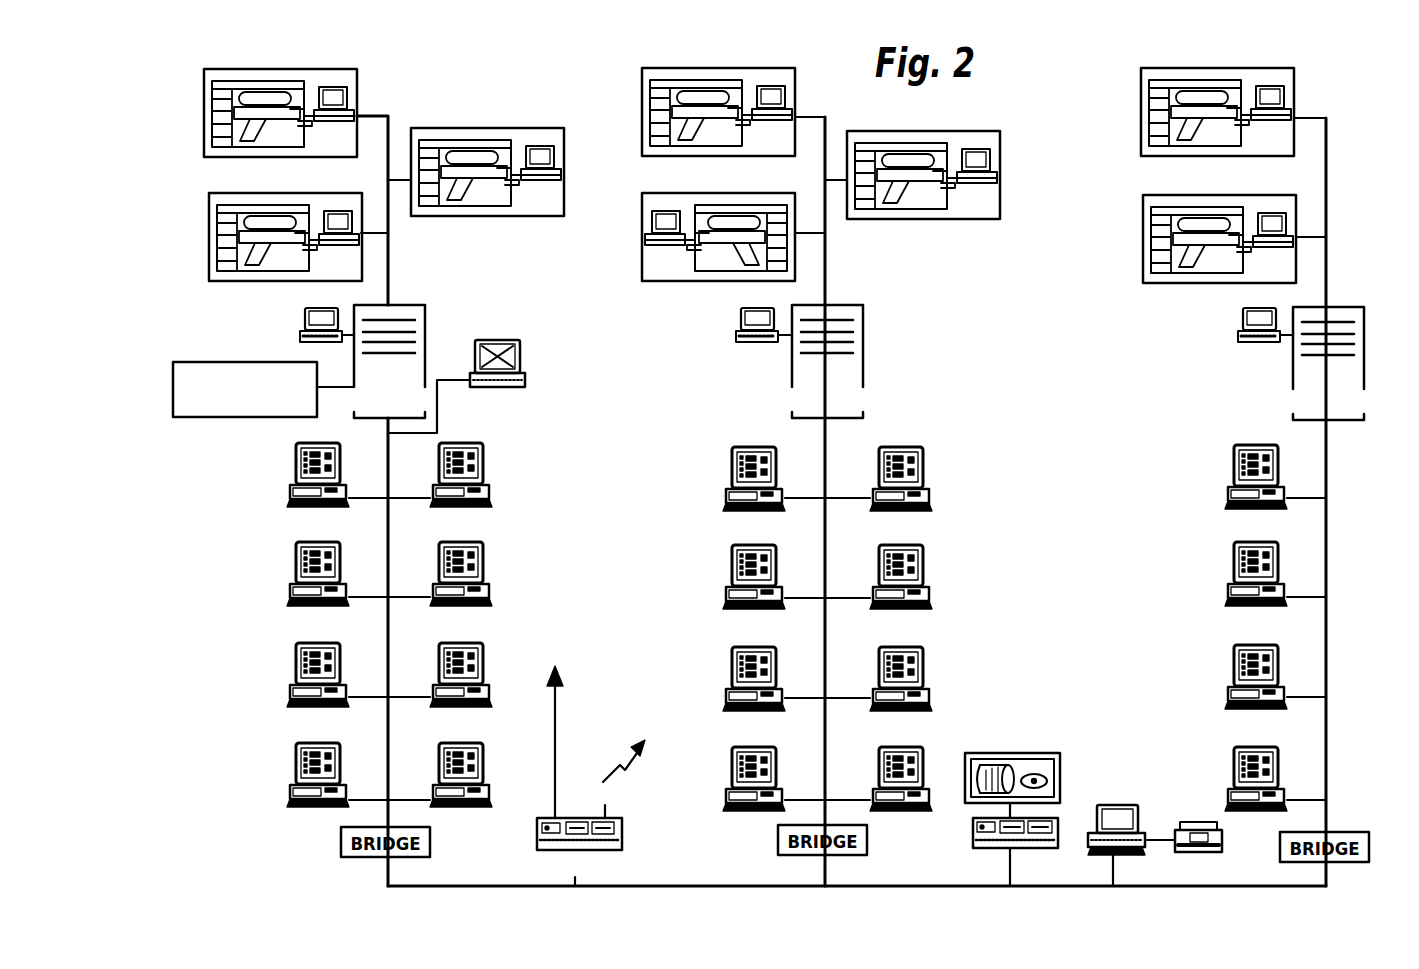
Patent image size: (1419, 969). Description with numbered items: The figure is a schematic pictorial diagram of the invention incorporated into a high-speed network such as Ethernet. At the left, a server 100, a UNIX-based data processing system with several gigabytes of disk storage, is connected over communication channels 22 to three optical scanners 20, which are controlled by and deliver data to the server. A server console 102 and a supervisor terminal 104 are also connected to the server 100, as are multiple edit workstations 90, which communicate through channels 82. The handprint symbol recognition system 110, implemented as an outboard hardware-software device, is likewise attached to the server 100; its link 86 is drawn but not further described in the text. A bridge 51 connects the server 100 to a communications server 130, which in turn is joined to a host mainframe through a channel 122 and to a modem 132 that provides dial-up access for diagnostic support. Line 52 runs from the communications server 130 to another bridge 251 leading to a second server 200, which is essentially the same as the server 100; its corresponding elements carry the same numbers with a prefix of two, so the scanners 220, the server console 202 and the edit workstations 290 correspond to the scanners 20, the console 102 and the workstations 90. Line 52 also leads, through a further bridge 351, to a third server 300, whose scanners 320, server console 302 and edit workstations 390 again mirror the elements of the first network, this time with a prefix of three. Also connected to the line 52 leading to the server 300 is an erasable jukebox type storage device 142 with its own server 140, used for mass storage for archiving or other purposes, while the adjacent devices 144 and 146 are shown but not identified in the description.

The optical scanner 20 is at (357, 92).
The communication channel 22 is at (378, 116).
The bridge 51 is at (341, 844).
The line 52 is at (422, 886).
The channel 82 is at (388, 463).
The link to handprint OCR engine 86 is at (335, 387).
The edit workstation 90 is at (287, 458).
The server 100 is at (425, 352).
The server console 102 is at (302, 320).
The supervisor terminal 104 is at (520, 355).
The handprint ISR system 110 is at (238, 362).
The channel 122 is at (555, 715).
The communications server 130 is at (537, 835).
The modem 132 is at (648, 800).
The server 140 is at (1055, 825).
The erasable jukebox type storage device 142 is at (1060, 762).
The print server workstation 144 is at (1122, 805).
The laser printer 146 is at (1200, 822).
The server 200 is at (863, 352).
The server console 202 is at (736, 327).
The optical scanner 220 is at (642, 118).
The bridge 251 is at (868, 838).
The edit workstation 290 is at (723, 462).
The server 300 is at (1293, 387).
The server console 302 is at (1238, 325).
The optical scanner 320 is at (1141, 130).
The bridge 351 is at (1280, 848).
The edit workstation 390 is at (1232, 465).